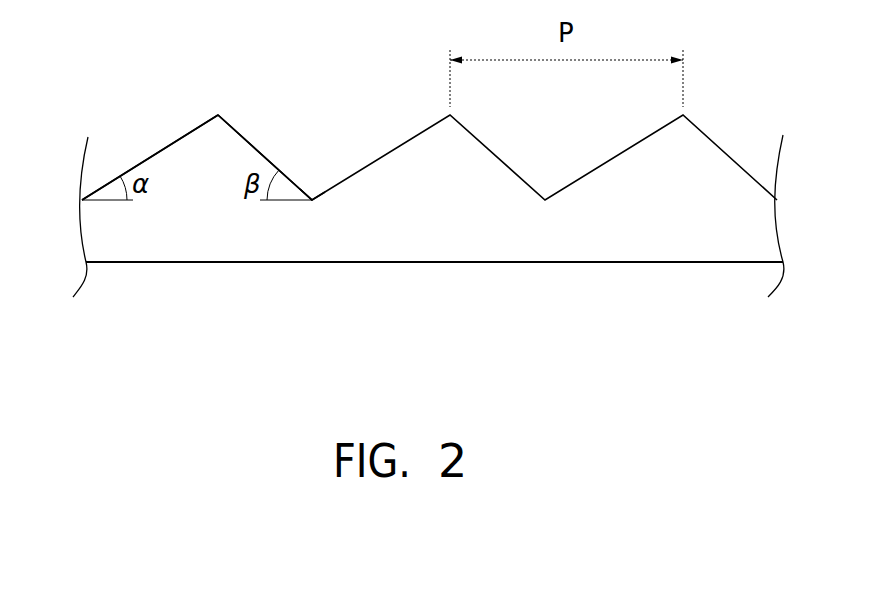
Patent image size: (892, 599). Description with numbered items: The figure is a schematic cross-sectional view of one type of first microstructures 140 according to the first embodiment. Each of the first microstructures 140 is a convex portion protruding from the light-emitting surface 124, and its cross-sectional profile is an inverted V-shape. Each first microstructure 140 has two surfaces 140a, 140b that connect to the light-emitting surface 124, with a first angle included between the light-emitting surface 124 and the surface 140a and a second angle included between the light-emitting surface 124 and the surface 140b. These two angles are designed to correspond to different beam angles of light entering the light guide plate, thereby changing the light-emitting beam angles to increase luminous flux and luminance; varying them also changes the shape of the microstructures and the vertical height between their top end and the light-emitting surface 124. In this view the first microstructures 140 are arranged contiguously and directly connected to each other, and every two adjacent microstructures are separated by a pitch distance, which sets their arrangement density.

The first microstructures 140 is at (185, 160).
The surface 140a is at (143, 163).
The surface 140b is at (250, 127).
The light-emitting surface 124 is at (311, 199).